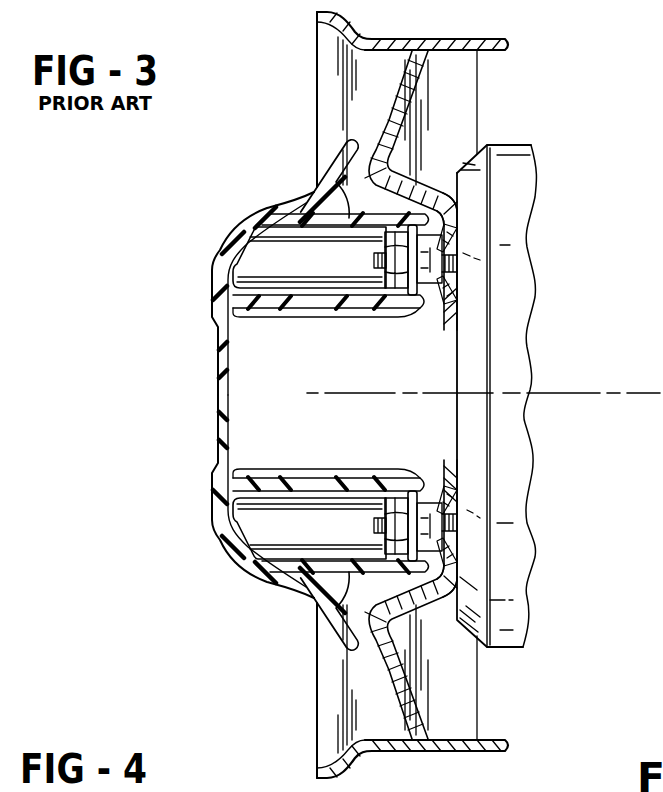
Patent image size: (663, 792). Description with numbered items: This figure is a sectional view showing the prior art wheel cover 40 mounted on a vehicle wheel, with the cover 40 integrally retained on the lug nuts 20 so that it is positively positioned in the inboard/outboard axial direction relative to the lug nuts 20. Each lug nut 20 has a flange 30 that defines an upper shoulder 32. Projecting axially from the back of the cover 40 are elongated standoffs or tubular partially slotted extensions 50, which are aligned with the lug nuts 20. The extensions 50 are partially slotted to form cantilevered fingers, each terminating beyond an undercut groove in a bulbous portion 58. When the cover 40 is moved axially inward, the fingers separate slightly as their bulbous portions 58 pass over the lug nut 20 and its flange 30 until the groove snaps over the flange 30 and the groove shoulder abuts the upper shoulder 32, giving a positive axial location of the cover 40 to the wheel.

The lug nuts 20 is at (388, 275).
The flange 30 is at (410, 256).
The upper shoulder 32 is at (391, 266).
The wheel cover 40 is at (316, 628).
The tubular partially slotted extensions 50 is at (338, 157).
The bulbous portion 58 is at (441, 243).